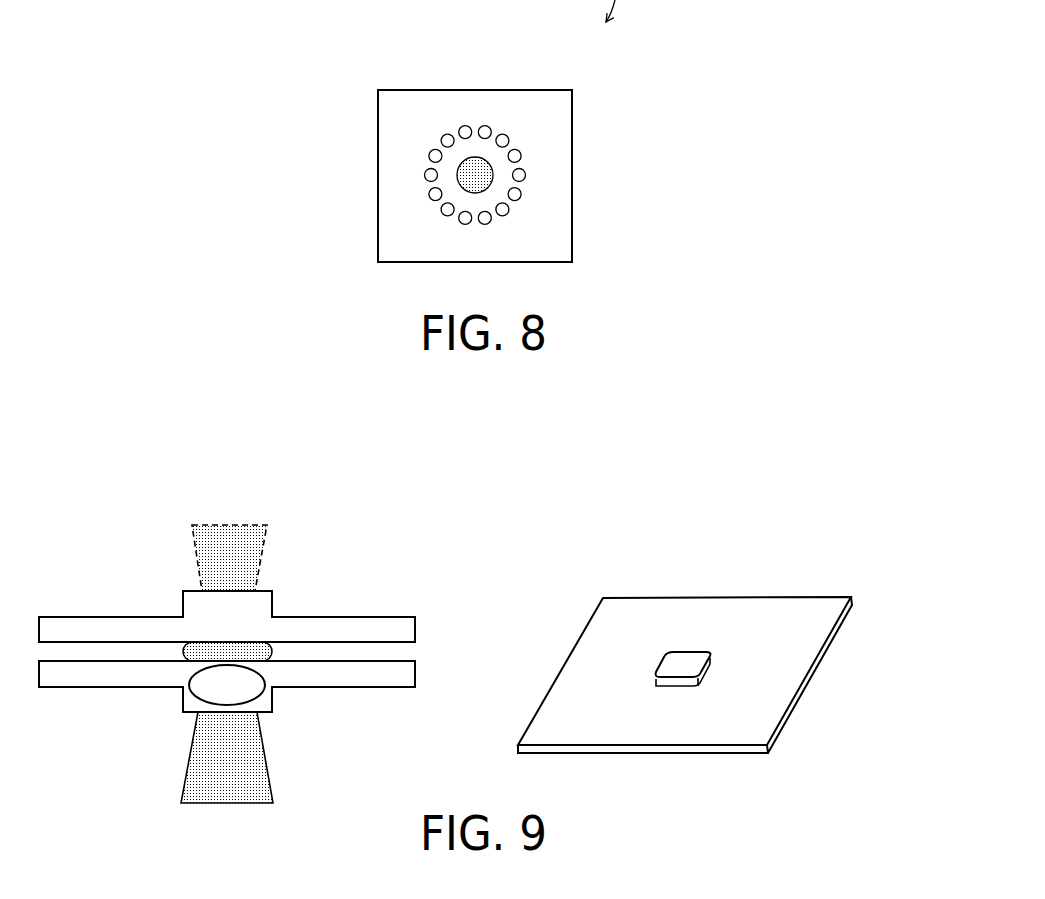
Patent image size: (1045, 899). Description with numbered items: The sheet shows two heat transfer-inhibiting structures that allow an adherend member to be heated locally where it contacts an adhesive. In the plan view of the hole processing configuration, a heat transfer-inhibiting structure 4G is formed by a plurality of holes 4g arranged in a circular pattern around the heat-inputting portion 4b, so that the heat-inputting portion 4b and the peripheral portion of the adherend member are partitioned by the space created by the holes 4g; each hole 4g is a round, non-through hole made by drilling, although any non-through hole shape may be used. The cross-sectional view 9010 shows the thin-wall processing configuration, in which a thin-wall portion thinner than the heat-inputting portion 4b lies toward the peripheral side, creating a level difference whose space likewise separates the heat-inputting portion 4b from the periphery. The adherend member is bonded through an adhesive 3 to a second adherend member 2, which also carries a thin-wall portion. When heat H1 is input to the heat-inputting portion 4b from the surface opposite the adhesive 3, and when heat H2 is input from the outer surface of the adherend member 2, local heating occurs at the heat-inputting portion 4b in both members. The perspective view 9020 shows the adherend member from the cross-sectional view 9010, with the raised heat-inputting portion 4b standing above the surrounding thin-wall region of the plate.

In FIG. 9, the adherend member 2 is at (415, 628).
In FIG. 9, the adhesive 3 is at (190, 647).
In FIG. 8, the heat-inputting portion 4b is at (489, 163).
In FIG. 8, the hole 4g is at (507, 217).
In FIG. 8, the heat transfer-inhibiting structure 4G is at (529, 195).
In FIG. 9, the heat H1 is at (265, 758).
In FIG. 9, the heat H2 is at (196, 560).
In FIG. 9, the cross-sectional view 9010 is at (266, 632).
In FIG. 9, the perspective view 9020 is at (721, 607).